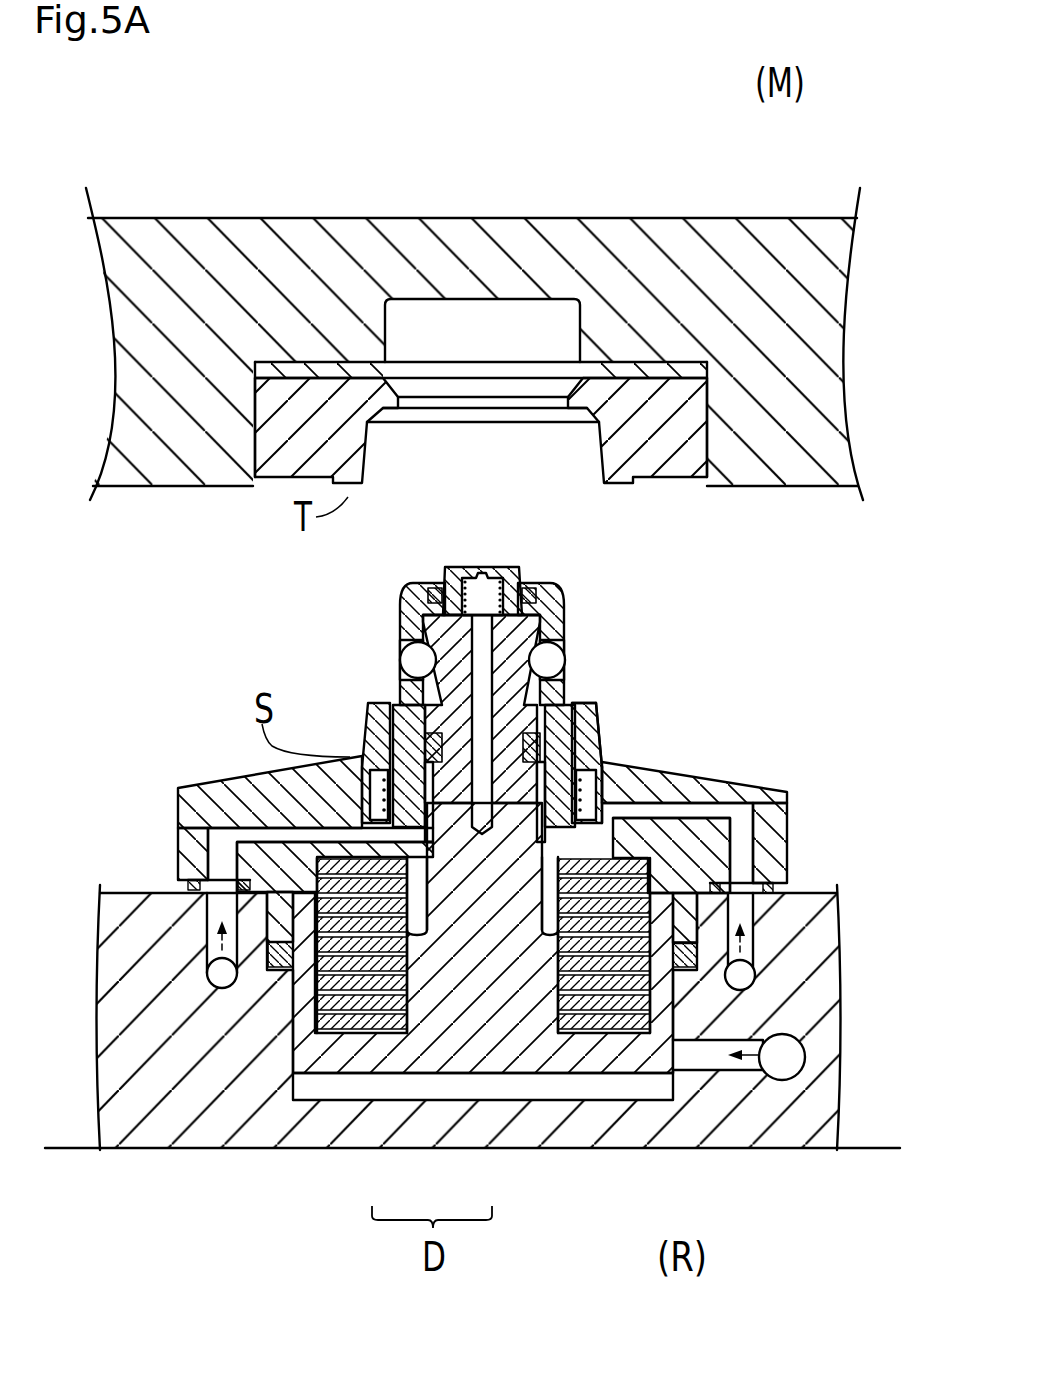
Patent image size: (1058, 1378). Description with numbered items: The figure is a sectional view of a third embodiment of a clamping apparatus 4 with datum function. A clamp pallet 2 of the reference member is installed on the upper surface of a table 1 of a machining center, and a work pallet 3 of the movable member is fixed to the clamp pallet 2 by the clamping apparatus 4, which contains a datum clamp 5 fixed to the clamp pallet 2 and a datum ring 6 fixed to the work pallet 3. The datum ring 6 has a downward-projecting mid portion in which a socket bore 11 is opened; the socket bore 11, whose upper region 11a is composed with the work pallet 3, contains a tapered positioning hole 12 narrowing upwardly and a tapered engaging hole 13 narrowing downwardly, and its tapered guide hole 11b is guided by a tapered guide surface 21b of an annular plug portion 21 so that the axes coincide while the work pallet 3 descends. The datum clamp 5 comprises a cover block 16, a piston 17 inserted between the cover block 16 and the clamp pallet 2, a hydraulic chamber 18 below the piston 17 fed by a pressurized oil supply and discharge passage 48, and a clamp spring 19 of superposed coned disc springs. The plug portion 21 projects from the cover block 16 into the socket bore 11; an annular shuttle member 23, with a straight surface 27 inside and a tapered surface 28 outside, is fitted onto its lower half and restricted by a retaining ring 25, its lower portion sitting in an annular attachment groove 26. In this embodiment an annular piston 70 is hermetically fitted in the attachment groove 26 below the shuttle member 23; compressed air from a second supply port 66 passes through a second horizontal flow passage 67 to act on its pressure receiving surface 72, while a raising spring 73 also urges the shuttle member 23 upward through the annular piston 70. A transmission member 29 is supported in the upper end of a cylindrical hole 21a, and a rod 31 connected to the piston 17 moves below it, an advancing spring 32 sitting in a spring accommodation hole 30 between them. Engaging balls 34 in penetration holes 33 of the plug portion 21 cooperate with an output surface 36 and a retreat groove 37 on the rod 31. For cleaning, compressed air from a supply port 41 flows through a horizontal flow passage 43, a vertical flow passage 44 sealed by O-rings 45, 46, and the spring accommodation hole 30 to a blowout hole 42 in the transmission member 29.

The table 1 is at (830, 1147).
The clamp pallet 2 is at (480, 1065).
The work pallet 3 is at (474, 300).
The clamping apparatus 4 is at (885, 583).
The datum clamp 5 is at (765, 773).
The datum ring 6 is at (667, 496).
The socket bore 11 is at (580, 337).
The upper die body 11a is at (445, 268).
The tapered guide hole 11b is at (377, 421).
The tapered positioning hole 12 is at (481, 425).
The tapered engaging hole 13 is at (398, 380).
The cover block 16 is at (500, 861).
The piston 17 is at (477, 1076).
The hydraulic chamber 18 is at (510, 1103).
The clamp spring 19 is at (360, 1007).
The plug portion 21 is at (438, 724).
The cylindrical hole 21a is at (560, 683).
The tapered guide surface 21b is at (580, 590).
The shuttle member 23 is at (602, 742).
The retaining ring 25 is at (605, 710).
The annular attachment groove 26 is at (367, 797).
The straight surface 27 is at (663, 781).
The tapered surface 28 is at (603, 727).
The transmission member 29 is at (458, 563).
The spring accommodation hole 30 is at (472, 568).
The rod 31 is at (400, 583).
The advancing spring 32 is at (489, 541).
The penetration hole 33 is at (558, 648).
The engaging ball 34 is at (403, 650).
The output surface 36 is at (425, 598).
The retreat groove 37 is at (405, 655).
The supply port 41 is at (210, 968).
The blowout hole 42 is at (510, 563).
The horizontal flow passage 43 is at (178, 815).
The vertical flow passage 44 is at (560, 615).
The O-ring 45 is at (482, 835).
The O-ring 46 is at (520, 747).
The pressurized oil supply and discharge passage 48 is at (782, 1078).
The second supply port 66 is at (755, 977).
The second horizontal flow passage 67 is at (727, 815).
The annular piston 70 is at (319, 759).
The pressure receiving surface 72 is at (370, 818).
The raising spring 73 is at (598, 843).